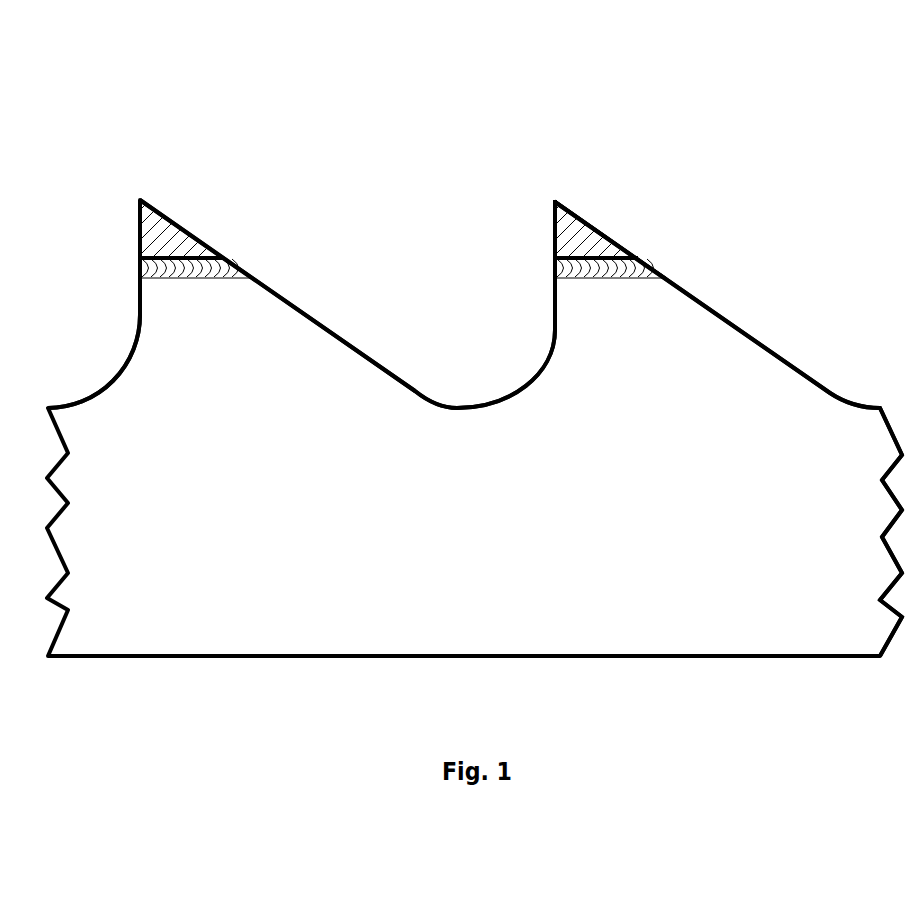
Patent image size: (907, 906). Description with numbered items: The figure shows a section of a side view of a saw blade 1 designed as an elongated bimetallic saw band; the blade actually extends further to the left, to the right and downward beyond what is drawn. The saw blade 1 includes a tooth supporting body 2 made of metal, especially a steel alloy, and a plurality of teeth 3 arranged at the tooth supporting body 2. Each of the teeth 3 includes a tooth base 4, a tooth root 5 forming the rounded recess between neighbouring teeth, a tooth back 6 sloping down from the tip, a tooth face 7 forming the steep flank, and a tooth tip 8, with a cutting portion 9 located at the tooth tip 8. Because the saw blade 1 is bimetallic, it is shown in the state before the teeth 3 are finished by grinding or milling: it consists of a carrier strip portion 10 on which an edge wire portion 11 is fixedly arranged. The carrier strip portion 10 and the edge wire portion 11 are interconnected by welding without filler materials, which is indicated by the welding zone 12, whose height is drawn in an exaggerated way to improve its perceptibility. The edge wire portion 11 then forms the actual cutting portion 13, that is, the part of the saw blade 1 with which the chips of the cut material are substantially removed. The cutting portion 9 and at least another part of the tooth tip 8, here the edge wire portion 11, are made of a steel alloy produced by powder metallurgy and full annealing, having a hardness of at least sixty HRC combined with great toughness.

The saw blade 1 is at (392, 200).
The tooth supporting body 2 is at (485, 475).
The teeth 3 is at (185, 240).
The tooth base 4 is at (248, 330).
The tooth root 5 is at (68, 402).
The tooth back 6 is at (310, 318).
The tooth face 7 is at (140, 310).
The tooth tip 8 is at (145, 266).
The cutting portion 9 is at (140, 200).
The carrier strip portion 10 is at (815, 515).
The edge wire portion 11 is at (162, 245).
The welding zone 12 is at (227, 268).
The cutting portion 13 is at (200, 256).